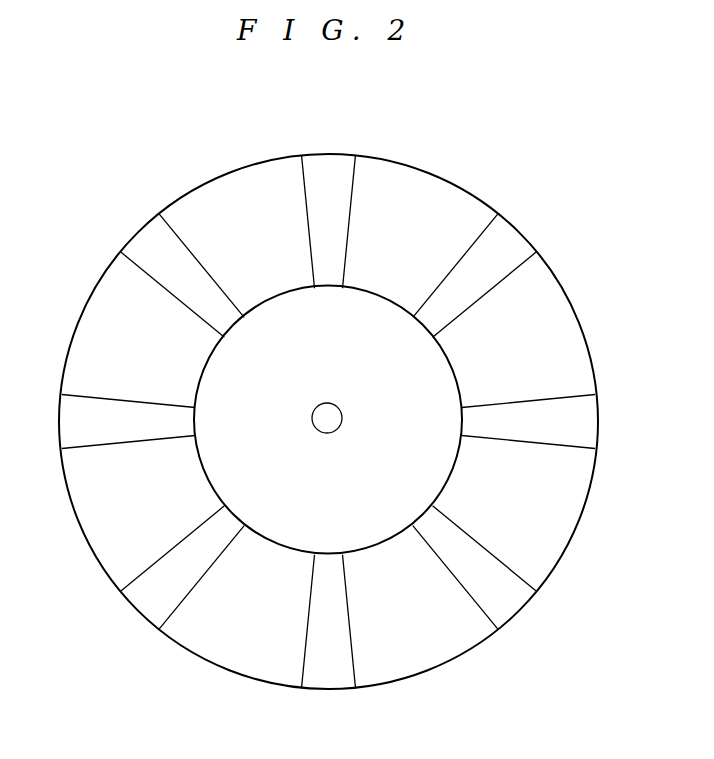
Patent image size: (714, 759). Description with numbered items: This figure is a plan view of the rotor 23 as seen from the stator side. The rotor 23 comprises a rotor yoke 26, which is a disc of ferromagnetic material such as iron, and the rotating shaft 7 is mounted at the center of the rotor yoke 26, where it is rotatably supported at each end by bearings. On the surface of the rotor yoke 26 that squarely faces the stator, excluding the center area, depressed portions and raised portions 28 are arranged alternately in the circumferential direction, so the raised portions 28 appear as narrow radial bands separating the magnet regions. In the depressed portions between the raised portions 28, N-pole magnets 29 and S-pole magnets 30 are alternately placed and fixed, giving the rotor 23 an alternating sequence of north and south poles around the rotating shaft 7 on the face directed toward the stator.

The rotor 23 is at (540, 194).
The rotor yoke 26 is at (560, 280).
The rotating shaft 7 is at (342, 422).
The raised portions 28 is at (330, 165).
The N-pole magnets 29 is at (232, 187).
The S-pole magnets 30 is at (427, 186).